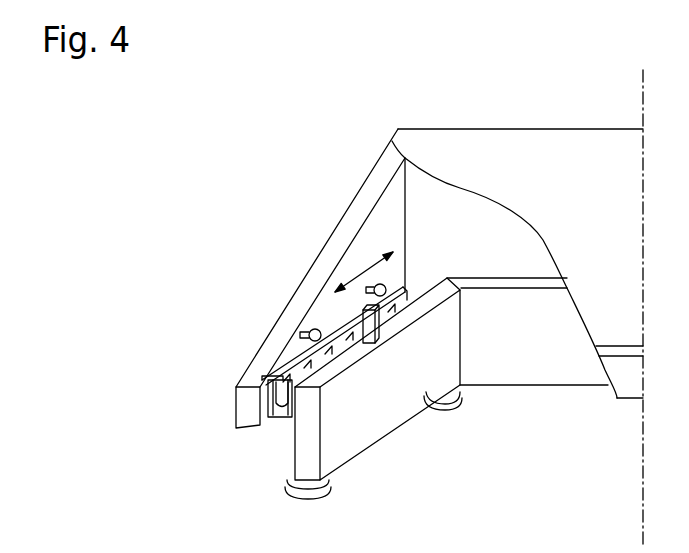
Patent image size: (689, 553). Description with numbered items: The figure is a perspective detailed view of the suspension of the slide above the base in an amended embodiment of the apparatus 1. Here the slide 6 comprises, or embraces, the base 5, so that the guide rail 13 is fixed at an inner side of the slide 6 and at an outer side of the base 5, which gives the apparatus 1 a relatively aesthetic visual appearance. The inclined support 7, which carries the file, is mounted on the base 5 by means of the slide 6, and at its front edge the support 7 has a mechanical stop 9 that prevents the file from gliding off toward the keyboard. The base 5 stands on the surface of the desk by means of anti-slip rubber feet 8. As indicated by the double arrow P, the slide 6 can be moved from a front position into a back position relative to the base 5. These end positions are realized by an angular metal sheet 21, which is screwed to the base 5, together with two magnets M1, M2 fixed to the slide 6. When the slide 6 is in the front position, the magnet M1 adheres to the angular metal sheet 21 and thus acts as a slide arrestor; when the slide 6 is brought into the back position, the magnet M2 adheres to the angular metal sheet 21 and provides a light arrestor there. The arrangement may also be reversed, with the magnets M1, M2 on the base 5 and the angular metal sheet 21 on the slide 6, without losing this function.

The apparatus 1 is at (139, 160).
The base 5 is at (294, 450).
The slide 6 is at (322, 258).
The support 7 is at (591, 235).
The anti-slip rubber feet 8 is at (287, 485).
The mechanical stop 9 is at (627, 382).
The guide rail 13 is at (281, 397).
The angular metal sheet 21 is at (352, 316).
The double arrow P is at (360, 272).
The magnet M1 is at (393, 292).
The magnet M2 is at (322, 336).